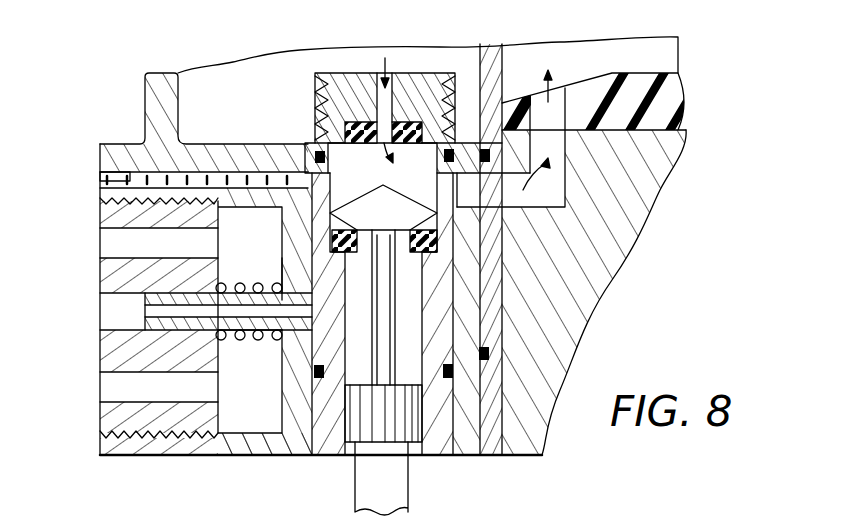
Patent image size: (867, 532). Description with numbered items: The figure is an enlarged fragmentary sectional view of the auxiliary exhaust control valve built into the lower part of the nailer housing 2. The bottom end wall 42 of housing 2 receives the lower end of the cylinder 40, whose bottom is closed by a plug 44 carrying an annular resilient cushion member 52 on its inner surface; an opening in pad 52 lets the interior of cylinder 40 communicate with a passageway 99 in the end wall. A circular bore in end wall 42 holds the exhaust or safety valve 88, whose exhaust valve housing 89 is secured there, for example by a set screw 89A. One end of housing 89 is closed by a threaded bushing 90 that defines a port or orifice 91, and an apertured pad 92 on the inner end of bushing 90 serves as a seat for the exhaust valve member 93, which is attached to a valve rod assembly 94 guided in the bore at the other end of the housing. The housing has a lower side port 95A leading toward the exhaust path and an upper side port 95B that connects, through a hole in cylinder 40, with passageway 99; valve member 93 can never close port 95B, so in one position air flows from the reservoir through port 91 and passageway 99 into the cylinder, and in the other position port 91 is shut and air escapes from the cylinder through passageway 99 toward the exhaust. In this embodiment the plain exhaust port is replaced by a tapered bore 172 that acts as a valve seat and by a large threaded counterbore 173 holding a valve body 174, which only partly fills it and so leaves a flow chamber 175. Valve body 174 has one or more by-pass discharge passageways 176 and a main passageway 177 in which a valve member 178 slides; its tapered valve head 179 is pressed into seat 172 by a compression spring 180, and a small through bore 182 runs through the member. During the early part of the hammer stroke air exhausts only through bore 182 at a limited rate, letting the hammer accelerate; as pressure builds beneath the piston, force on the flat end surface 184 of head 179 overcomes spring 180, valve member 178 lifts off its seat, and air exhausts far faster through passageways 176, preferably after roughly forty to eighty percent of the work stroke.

The hollow housing 2 is at (100, 168).
The cylinder 40 is at (495, 57).
The bottom end wall 42 is at (212, 143).
The plug 44 is at (590, 280).
The annular resilient cushion member 52 is at (667, 102).
The exhaust or safety valve 88 is at (315, 79).
The exhaust valve housing 89 is at (440, 307).
The set screw 89A is at (100, 183).
The threaded bushing 90 is at (350, 82).
The port or orifice 91 is at (378, 97).
The apertured pad 92 is at (407, 127).
The exhaust valve member 93 is at (400, 227).
The valve rod assembly 94 is at (405, 497).
The lower side port 95A is at (325, 287).
The upper side port 95B is at (448, 190).
The passageway 99 is at (543, 193).
The tapered bore 172 is at (282, 268).
The counterbore 173 is at (255, 418).
The valve body 174 is at (120, 417).
The flow chamber 175 is at (289, 172).
The by-pass discharge passageways 176 is at (118, 243).
The main passageway 177 is at (100, 295).
The valve member 178 is at (127, 343).
The tapered valve head 179 is at (305, 362).
The compression spring 180 is at (233, 280).
The through bore 182 is at (157, 311).
The flat end surface 184 is at (285, 338).